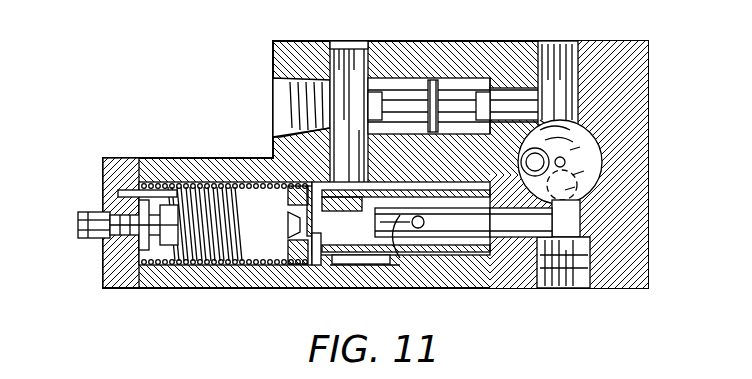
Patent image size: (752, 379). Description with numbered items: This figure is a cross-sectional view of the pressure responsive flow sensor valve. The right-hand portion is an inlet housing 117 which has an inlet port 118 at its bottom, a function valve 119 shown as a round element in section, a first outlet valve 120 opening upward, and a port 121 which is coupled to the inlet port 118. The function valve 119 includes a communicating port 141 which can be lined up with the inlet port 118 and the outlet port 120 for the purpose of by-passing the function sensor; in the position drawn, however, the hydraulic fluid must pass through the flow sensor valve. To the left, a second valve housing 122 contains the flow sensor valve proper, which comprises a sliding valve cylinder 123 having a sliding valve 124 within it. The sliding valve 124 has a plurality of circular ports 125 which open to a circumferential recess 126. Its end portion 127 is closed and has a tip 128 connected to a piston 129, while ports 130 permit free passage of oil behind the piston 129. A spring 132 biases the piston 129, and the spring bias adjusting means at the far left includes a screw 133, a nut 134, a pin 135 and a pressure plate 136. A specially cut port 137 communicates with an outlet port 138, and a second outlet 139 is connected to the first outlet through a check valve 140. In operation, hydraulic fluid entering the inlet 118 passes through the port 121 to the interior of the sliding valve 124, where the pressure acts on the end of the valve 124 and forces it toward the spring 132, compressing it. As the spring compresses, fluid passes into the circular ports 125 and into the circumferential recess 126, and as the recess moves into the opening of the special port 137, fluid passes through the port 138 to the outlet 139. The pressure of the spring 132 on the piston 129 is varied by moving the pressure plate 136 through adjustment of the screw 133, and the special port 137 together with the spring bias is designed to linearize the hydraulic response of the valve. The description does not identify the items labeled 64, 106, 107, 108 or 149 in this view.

The inlet port 64 is at (280, 98).
The valve body 106 is at (522, 160).
The passage 107 is at (578, 208).
The orifice 108 is at (566, 162).
The inlet housing 117 is at (648, 86).
The inlet port 118 is at (582, 290).
The function valve 119 is at (582, 138).
The first outlet valve 120 is at (566, 41).
The port 121 is at (521, 222).
The second valve housing 122 is at (195, 283).
The sliding valve cylinder 123 is at (424, 250).
The sliding valve 124 is at (490, 222).
The circular ports 125 is at (368, 270).
The circumferential recess 126 is at (442, 195).
The end portion 127 is at (340, 237).
The tip 128 is at (300, 254).
The piston 129 is at (300, 226).
The ports 130 is at (300, 204).
The spring 132 is at (192, 186).
The screw 133 is at (138, 242).
The nut 134 is at (88, 212).
The pin 135 is at (118, 193).
The pressure plate 136 is at (143, 258).
The specially cut port 137 is at (348, 192).
The outlet port 138 is at (338, 148).
The second outlet 139 is at (346, 41).
The check valve 140 is at (454, 106).
The communicating port 141 is at (550, 168).
The drain passage 149 is at (363, 266).